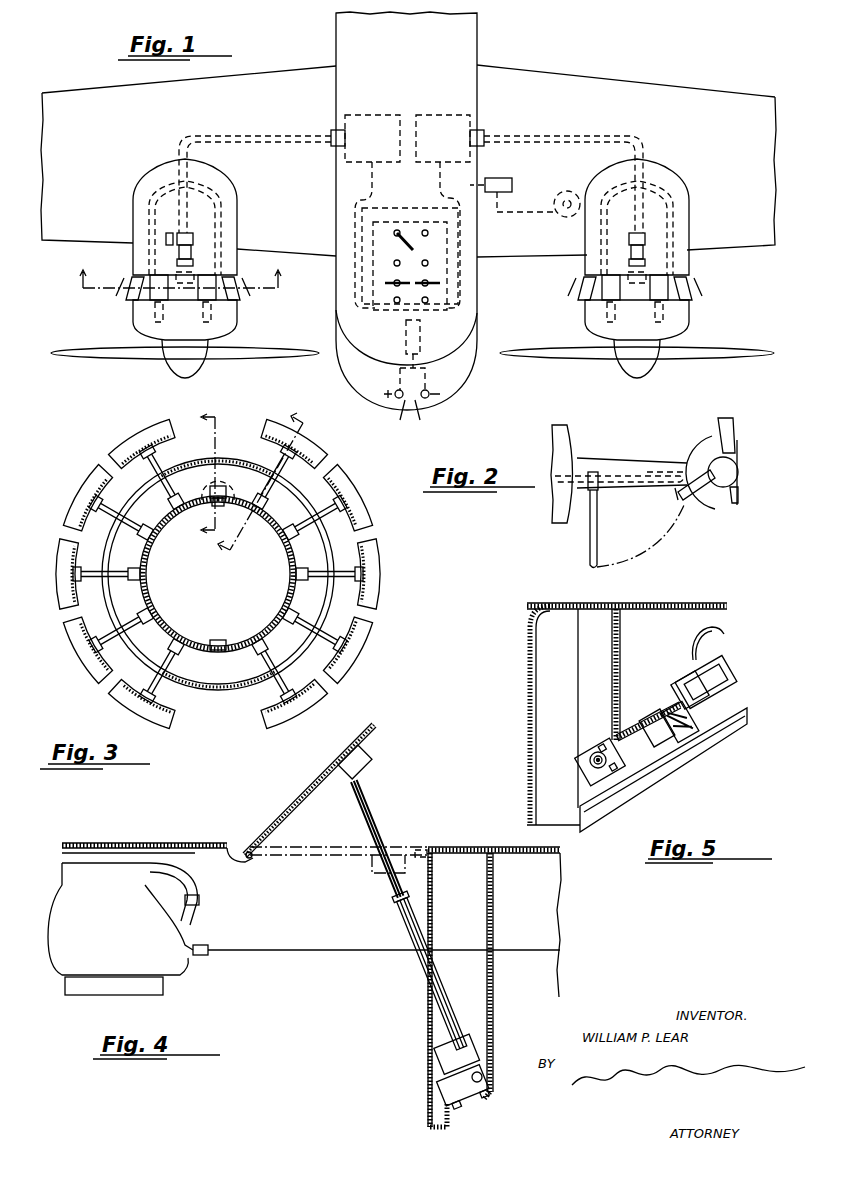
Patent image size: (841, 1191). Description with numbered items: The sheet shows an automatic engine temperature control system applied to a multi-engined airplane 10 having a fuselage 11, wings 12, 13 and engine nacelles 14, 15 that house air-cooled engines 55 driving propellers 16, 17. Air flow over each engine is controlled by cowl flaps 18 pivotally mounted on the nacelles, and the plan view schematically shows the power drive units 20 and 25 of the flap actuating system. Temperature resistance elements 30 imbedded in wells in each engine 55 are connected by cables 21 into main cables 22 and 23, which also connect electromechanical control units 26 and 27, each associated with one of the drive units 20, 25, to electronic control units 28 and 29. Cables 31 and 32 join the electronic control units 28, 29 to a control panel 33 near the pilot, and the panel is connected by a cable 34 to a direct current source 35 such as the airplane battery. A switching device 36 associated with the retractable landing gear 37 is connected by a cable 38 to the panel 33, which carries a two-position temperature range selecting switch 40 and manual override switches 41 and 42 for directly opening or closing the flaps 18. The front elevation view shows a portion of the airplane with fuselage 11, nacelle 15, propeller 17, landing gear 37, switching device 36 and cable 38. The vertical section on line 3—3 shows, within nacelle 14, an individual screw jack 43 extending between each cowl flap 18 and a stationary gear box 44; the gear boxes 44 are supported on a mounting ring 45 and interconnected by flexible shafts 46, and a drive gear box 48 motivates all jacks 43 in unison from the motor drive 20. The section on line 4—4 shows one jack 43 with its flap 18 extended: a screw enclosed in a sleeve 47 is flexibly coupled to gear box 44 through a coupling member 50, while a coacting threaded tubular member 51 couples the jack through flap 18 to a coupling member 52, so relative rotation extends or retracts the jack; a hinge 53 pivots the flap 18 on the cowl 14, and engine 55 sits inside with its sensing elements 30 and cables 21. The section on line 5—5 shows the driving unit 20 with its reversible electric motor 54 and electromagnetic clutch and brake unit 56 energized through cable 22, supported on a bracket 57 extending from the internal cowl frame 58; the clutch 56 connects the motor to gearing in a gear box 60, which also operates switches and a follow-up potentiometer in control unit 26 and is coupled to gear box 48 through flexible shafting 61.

In FIG. 1, the airplane 10 is at (548, 62).
In FIG. 1, the fuselage 11 is at (478, 318).
In FIG. 2, the fuselage 11 is at (576, 440).
In FIG. 1, the wing 12 is at (289, 74).
In FIG. 1, the wing 13 is at (676, 92).
In FIG. 1, the engine nacelle 14 is at (237, 210).
In FIG. 3, the engine nacelle 14 is at (243, 466).
In FIG. 4, the engine nacelle 14 is at (180, 843).
In FIG. 1, the engine nacelle 15 is at (689, 216).
In FIG. 2, the engine nacelle 15 is at (725, 502).
In FIG. 1, the propeller 16 is at (252, 356).
In FIG. 1, the propeller 17 is at (738, 357).
In FIG. 2, the propeller 17 is at (716, 424).
In FIG. 1, the cowl flaps 18 is at (148, 290).
In FIG. 3, the cowl flaps 18 is at (315, 460).
In FIG. 4, the cowl flaps 18 is at (300, 796).
In FIG. 1, the power drive unit 20 is at (193, 244).
In FIG. 3, the power drive unit 20 is at (204, 492).
In FIG. 1, the cables 21 is at (149, 210).
In FIG. 4, the cables 21 is at (286, 952).
In FIG. 1, the main cable 22 is at (250, 134).
In FIG. 5, the main cable 22 is at (726, 632).
In FIG. 1, the main cable 23 is at (587, 134).
In FIG. 1, the power drive unit 25 is at (648, 242).
In FIG. 1, the electromechanical control unit 26 is at (170, 233).
In FIG. 5, the electromechanical control unit 26 is at (724, 674).
In FIG. 1, the electromechanical control unit 27 is at (629, 234).
In FIG. 1, the electronic control unit 28 is at (374, 122).
In FIG. 1, the electronic control unit 29 is at (443, 122).
In FIG. 1, the temperature resistance element 30 is at (155, 318).
In FIG. 4, the temperature resistance element 30 is at (208, 944).
In FIG. 1, the cable 31 is at (366, 176).
In FIG. 1, the cable 32 is at (430, 170).
In FIG. 1, the control panel 33 is at (384, 222).
In FIG. 1, the cable 34 is at (422, 328).
In FIG. 1, the source of direct current 35 is at (412, 396).
In FIG. 1, the switching device 36 is at (518, 178).
In FIG. 2, the switching device 36 is at (600, 470).
In FIG. 1, the retractable landing gear 37 is at (533, 214).
In FIG. 2, the retractable landing gear 37 is at (588, 530).
In FIG. 1, the cable 38 is at (490, 176).
In FIG. 2, the cable 38 is at (556, 496).
In FIG. 1, the temperature range selecting switch 40 is at (418, 242).
In FIG. 1, the manual override switch 41 is at (396, 276).
In FIG. 1, the manual override switch 42 is at (427, 276).
In FIG. 3, the screw jack 43 is at (115, 494).
In FIG. 4, the screw jack 43 is at (396, 938).
In FIG. 3, the gear box 44 is at (150, 548).
In FIG. 4, the gear box 44 is at (440, 1092).
In FIG. 3, the mounting ring 45 is at (236, 652).
In FIG. 3, the flexible shafts 46 is at (175, 590).
In FIG. 5, the flexible shafts 46 is at (586, 770).
In FIG. 4, the flexible shafts 46 is at (486, 1072).
In FIG. 4, the sleeve 47 is at (442, 988).
In FIG. 3, the drive gear box 48 is at (222, 508).
In FIG. 5, the drive gear box 48 is at (598, 752).
In FIG. 4, the coupling member 50 is at (458, 1042).
In FIG. 3, the tubular member 51 is at (282, 690).
In FIG. 4, the tubular member 51 is at (380, 808).
In FIG. 3, the coupling member 52 is at (288, 690).
In FIG. 4, the coupling member 52 is at (370, 762).
In FIG. 4, the hinge 53 is at (240, 868).
In FIG. 5, the reversible electric motor 54 is at (676, 746).
In FIG. 1, the aircooled engine 55 is at (213, 310).
In FIG. 4, the aircooled engine 55 is at (182, 970).
In FIG. 5, the electromagnetic clutch and brake unit 56 is at (692, 740).
In FIG. 5, the bracket 57 is at (625, 808).
In FIG. 5, the internal cowl frame 58 is at (622, 644).
In FIG. 5, the gear box 60 is at (686, 684).
In FIG. 5, the flexible shafting 61 is at (655, 722).
In FIG. 1, the section line 3— 3 is at (180, 269).
In FIG. 3, the section line 4— 4 is at (251, 481).
In FIG. 3, the section line 5— 5 is at (199, 475).